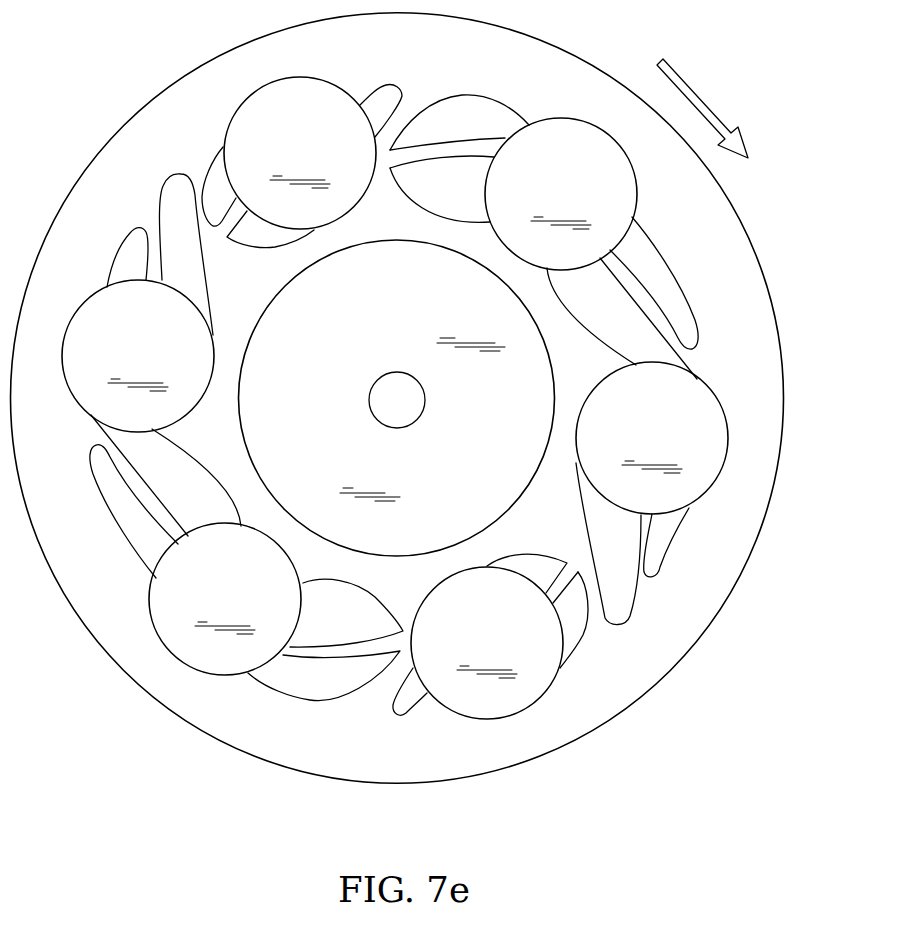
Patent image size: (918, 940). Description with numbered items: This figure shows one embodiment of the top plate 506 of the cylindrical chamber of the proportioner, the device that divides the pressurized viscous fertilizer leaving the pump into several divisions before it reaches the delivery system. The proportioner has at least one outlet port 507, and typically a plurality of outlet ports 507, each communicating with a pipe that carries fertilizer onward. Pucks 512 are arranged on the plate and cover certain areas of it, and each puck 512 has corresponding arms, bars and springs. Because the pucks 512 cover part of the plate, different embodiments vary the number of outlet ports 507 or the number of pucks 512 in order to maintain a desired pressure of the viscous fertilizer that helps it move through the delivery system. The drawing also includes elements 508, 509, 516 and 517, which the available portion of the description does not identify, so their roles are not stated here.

The top plate 506 is at (408, 302).
The outlet port 507 is at (125, 268).
The long vane 508 is at (160, 240).
The center hole / shaft opening 509 is at (381, 376).
The puck 512 is at (324, 145).
The rotation direction arrow 516 is at (665, 61).
The outer housing / ring 517 is at (402, 57).